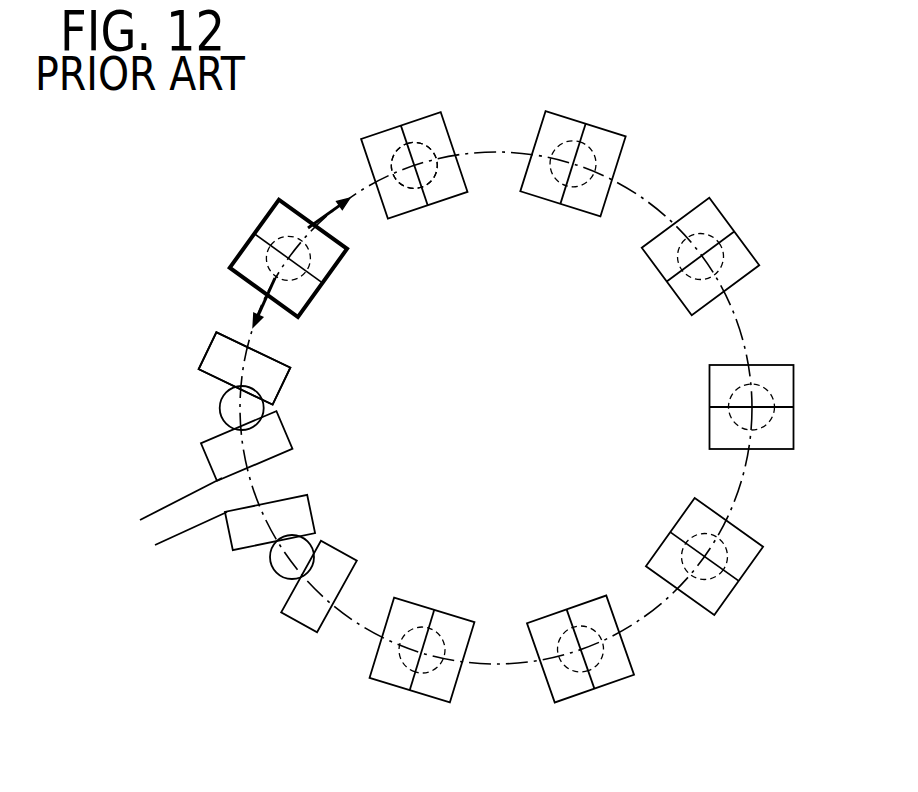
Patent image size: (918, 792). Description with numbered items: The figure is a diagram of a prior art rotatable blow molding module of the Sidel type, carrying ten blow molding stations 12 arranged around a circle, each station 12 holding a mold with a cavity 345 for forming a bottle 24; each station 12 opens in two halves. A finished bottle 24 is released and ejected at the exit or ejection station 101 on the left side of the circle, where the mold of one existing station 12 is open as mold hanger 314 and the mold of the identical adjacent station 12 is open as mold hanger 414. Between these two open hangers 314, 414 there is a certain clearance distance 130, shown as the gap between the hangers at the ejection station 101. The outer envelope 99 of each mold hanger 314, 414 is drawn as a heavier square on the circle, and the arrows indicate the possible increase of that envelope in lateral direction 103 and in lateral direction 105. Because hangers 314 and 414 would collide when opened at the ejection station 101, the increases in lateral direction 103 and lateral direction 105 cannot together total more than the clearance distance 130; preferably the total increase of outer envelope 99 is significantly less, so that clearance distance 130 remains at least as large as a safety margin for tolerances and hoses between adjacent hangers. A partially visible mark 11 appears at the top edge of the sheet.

The blow molding station 12 is at (355, 152).
The cavity 345 is at (415, 145).
The outer envelope 99 is at (253, 235).
The lateral direction 105 is at (321, 203).
The lateral direction 103 is at (244, 302).
The ejection station 101 is at (173, 378).
The bottle 24 is at (220, 405).
The open mold hanger 314 is at (283, 432).
The open mold hanger 414 is at (313, 515).
The clearance distance 130 is at (183, 563).
The apparatus (partially visible) 11 is at (517, 6).